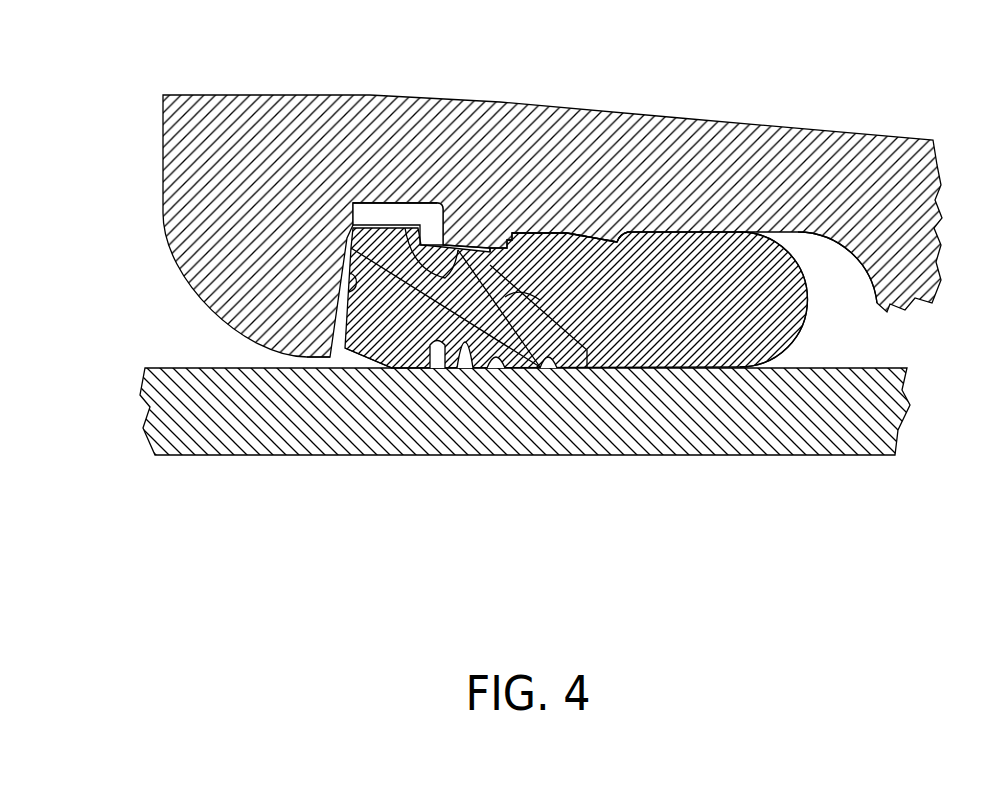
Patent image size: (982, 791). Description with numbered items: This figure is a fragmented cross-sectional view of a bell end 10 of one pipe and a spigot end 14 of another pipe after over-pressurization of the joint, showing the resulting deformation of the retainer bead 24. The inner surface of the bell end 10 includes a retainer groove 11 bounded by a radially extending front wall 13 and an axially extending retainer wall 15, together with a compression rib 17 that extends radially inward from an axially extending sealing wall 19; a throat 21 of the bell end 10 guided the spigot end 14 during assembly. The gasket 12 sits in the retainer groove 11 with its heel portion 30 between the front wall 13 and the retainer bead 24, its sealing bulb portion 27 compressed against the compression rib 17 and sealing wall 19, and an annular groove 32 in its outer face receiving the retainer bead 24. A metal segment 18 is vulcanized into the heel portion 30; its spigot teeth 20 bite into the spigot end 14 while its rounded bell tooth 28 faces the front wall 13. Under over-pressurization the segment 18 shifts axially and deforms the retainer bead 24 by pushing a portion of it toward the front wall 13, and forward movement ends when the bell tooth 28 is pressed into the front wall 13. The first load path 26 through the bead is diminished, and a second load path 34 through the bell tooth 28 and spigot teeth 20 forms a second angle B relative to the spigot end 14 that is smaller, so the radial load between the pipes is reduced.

The bell end 10 is at (163, 103).
The retainer groove 11 is at (382, 205).
The gasket 12 is at (395, 342).
The front wall 13 is at (356, 278).
The spigot end 14 is at (177, 443).
The retainer wall 15 is at (412, 208).
The compression rib 17 is at (620, 243).
The metal segment 18 is at (585, 347).
The sealing wall 19 is at (798, 232).
The spigot teeth 20 is at (522, 362).
The throat 21 is at (306, 360).
The retainer bead 24 is at (568, 232).
The first load path 26 is at (505, 297).
The sealing bulb portion 27 is at (805, 310).
The bell tooth 28 is at (350, 245).
The heel portion 30 is at (380, 370).
The annular groove 32 is at (505, 266).
The second load path 34 is at (434, 355).
The second angle B is at (473, 360).